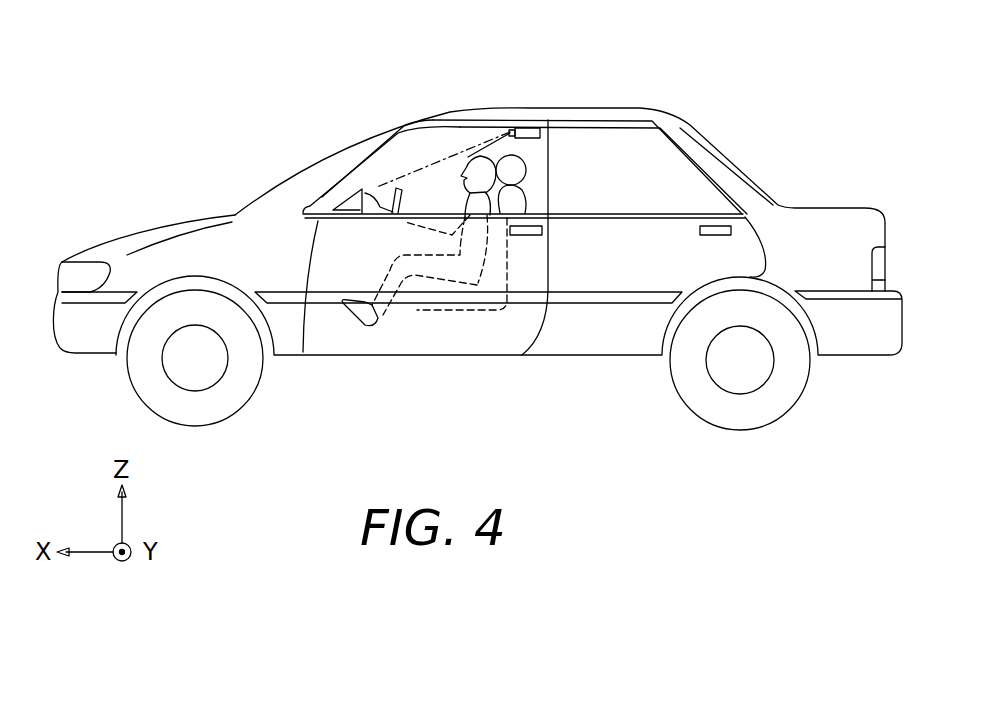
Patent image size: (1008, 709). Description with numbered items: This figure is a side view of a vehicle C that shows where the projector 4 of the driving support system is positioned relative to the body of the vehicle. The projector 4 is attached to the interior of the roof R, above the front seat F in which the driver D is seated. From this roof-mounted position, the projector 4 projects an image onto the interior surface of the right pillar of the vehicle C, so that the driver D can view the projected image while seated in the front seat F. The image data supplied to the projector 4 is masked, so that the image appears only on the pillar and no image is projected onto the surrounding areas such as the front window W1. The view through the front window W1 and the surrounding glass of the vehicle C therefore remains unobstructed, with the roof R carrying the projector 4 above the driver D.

The vehicle C is at (137, 241).
The front window W1 is at (323, 173).
The driver D is at (477, 164).
The projector 4 is at (527, 128).
The roof R is at (605, 108).
The front seat F is at (530, 171).